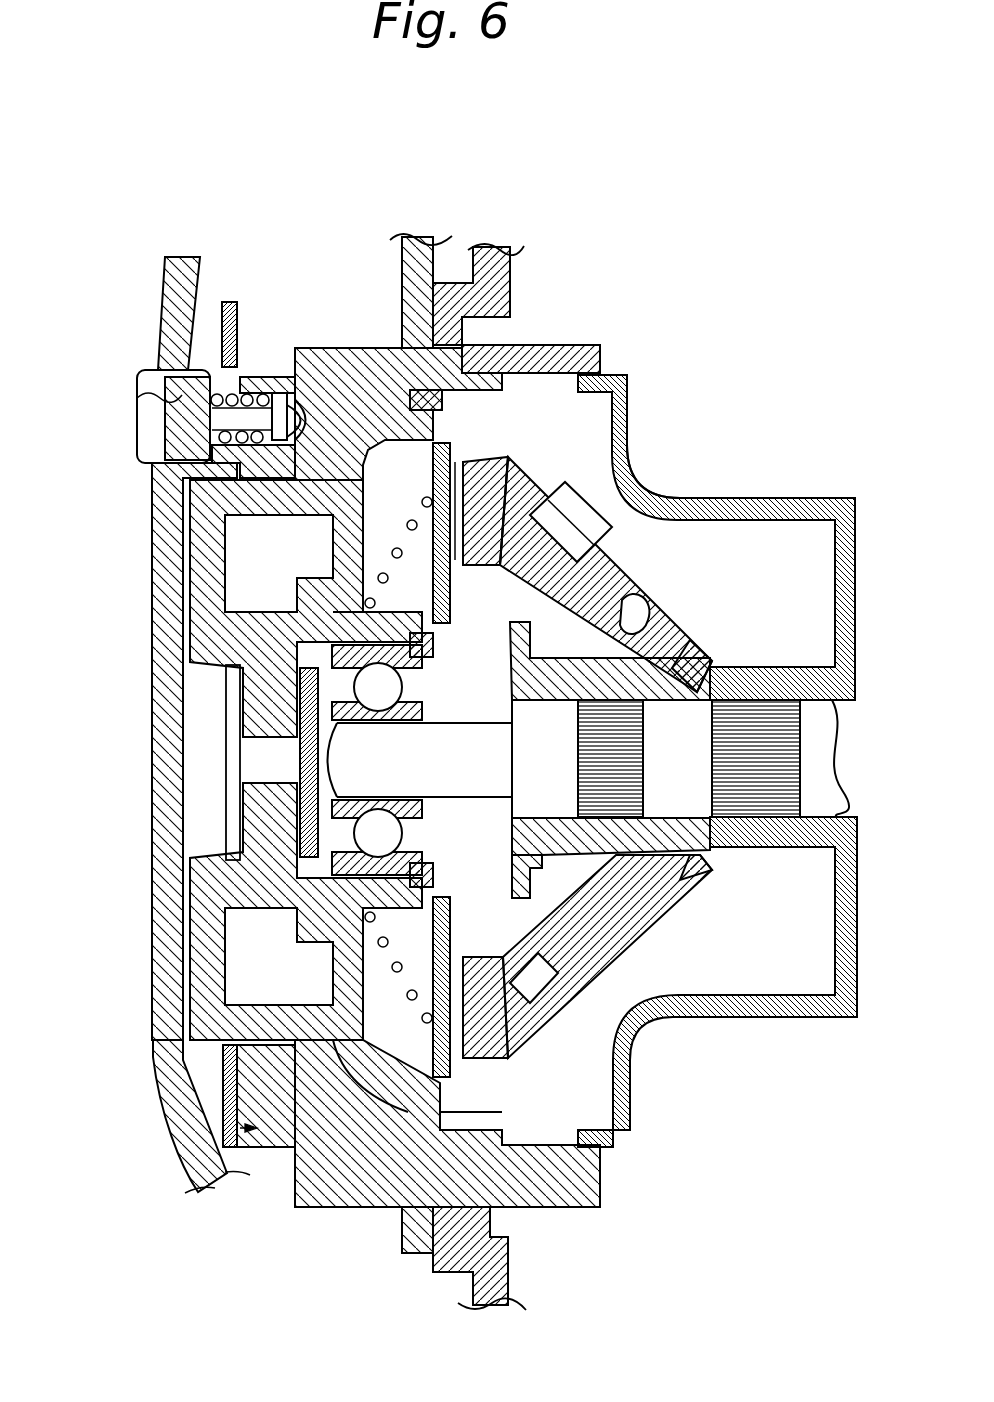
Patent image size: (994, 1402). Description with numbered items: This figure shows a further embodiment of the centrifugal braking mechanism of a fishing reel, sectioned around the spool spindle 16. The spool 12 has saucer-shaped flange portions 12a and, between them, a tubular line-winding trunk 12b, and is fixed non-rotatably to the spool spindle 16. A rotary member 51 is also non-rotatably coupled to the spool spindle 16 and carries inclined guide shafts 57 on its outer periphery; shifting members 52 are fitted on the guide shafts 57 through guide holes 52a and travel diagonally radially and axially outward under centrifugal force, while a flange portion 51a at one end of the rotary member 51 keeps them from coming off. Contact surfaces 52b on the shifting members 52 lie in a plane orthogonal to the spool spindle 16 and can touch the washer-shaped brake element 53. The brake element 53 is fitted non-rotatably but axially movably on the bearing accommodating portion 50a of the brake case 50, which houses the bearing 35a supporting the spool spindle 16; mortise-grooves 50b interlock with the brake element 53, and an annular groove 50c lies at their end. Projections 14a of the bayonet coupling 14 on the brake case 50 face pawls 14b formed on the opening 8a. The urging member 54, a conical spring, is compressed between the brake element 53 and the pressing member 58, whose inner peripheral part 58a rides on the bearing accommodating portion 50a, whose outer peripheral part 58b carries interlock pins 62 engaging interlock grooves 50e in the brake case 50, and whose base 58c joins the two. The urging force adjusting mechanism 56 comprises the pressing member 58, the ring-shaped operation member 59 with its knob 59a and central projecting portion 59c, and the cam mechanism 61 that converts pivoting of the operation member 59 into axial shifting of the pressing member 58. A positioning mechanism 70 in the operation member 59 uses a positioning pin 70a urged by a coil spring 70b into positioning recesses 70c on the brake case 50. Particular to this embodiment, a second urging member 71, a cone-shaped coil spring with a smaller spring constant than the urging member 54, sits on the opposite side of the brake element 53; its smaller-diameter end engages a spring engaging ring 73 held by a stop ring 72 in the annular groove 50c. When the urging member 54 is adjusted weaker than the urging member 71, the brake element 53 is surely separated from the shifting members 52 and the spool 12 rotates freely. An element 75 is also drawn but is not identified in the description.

The opening 8a is at (480, 333).
The spool 12 is at (703, 480).
The flange portions 12a is at (658, 484).
The line-winding trunk 12b is at (798, 500).
The bayonet coupling 14 is at (520, 290).
The projections 14a is at (447, 330).
The pawls 14b is at (425, 275).
The spool spindle 16 is at (690, 797).
The bearing 35a is at (434, 713).
The brake case 50 is at (210, 563).
The bearing accommodating portion 50a is at (355, 628).
The mortise-grooves 50b is at (423, 617).
The annular groove 50c is at (692, 575).
The interlock grooves 50e is at (490, 400).
The rotary member 51 is at (704, 650).
The flange portion 51a is at (518, 882).
The shifting members 52 is at (636, 576).
The guide holes 52a is at (650, 632).
The contact surfaces 52b is at (510, 466).
The brake element 53 is at (456, 470).
The urging member 54 is at (402, 520).
The urging force adjusting mechanism 56 is at (275, 1155).
The guide shafts 57 is at (565, 577).
The pressing member 58 is at (365, 1110).
The inner peripheral part 58a is at (290, 603).
The outer peripheral part 58b is at (362, 430).
The base 58c is at (337, 530).
The operation member 59 is at (222, 1137).
The knob 59a is at (178, 390).
The central projecting portion 59c is at (152, 415).
The cam mechanism 61 is at (329, 1110).
The interlock pins 62 is at (425, 400).
The positioning mechanism 70 is at (246, 366).
The positioning pin 70a is at (258, 417).
The coil spring 70b is at (215, 370).
The positioning recesses 70c is at (306, 402).
The urging member 71 is at (515, 478).
The stop ring 72 is at (525, 522).
The spring engaging ring 73 is at (630, 572).
The seal ring 75 is at (227, 1098).